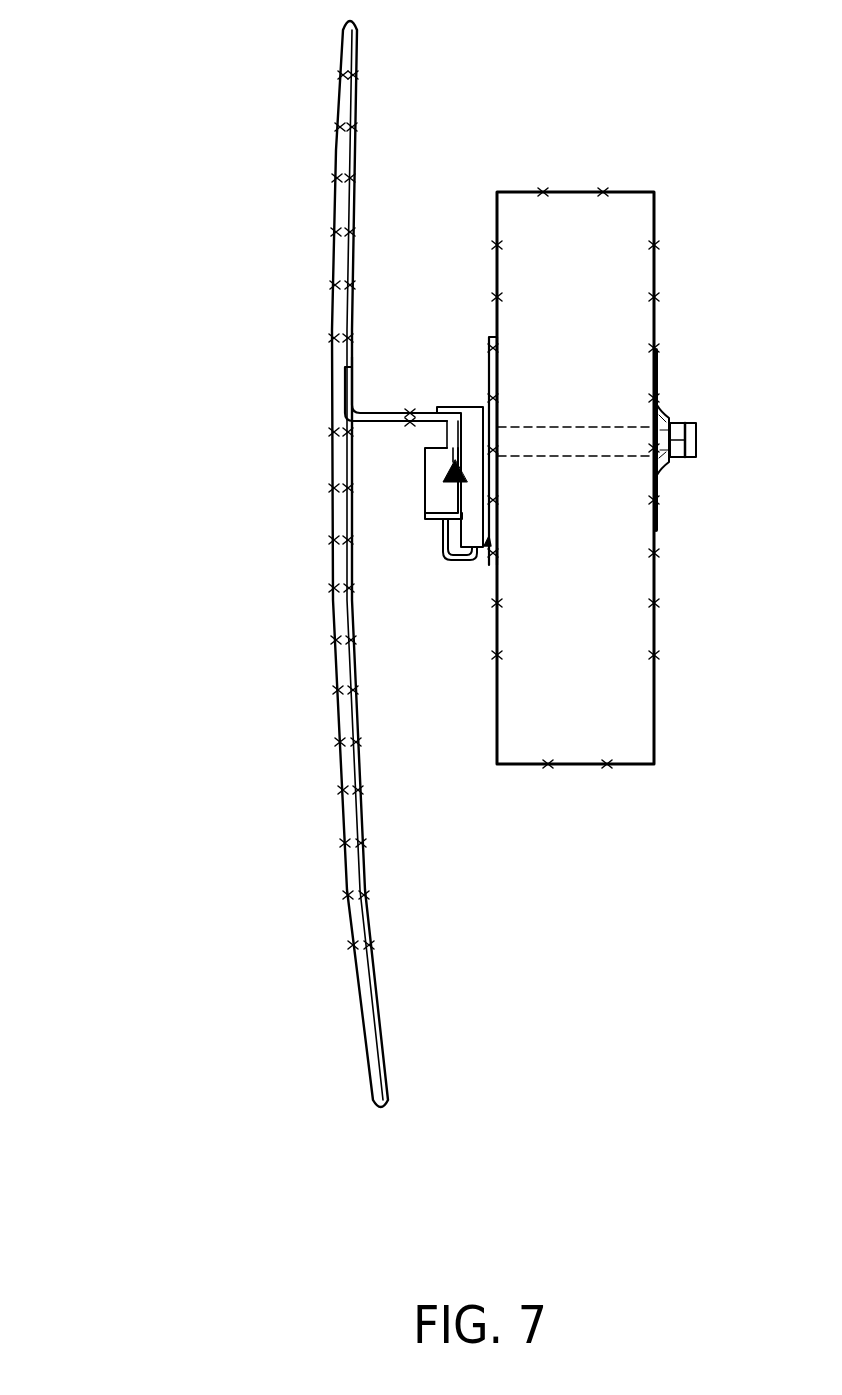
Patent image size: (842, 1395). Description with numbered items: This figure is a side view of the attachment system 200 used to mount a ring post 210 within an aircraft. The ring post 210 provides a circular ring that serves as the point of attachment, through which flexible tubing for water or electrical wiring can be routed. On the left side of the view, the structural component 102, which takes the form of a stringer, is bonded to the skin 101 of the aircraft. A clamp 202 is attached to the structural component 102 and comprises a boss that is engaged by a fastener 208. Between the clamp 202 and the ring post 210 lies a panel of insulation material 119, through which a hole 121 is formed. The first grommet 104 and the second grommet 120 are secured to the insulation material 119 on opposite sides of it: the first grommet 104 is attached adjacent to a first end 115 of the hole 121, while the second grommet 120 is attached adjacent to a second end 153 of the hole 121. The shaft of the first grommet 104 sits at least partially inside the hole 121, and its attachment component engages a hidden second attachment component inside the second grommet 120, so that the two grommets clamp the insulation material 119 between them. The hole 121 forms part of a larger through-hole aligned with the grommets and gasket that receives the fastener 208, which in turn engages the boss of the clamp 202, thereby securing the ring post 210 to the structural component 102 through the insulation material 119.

The attachment system 200 is at (148, 88).
The skin 101 is at (347, 62).
The structural component 102 is at (372, 410).
The first grommet 104 is at (493, 356).
The insulation material 119 is at (640, 198).
The second grommet 120 is at (657, 375).
The hole 121 is at (557, 433).
The first end 115 is at (503, 476).
The second end 153 is at (661, 497).
The clamp 202 is at (437, 498).
The fastener 208 is at (690, 432).
The ring post 210 is at (660, 410).